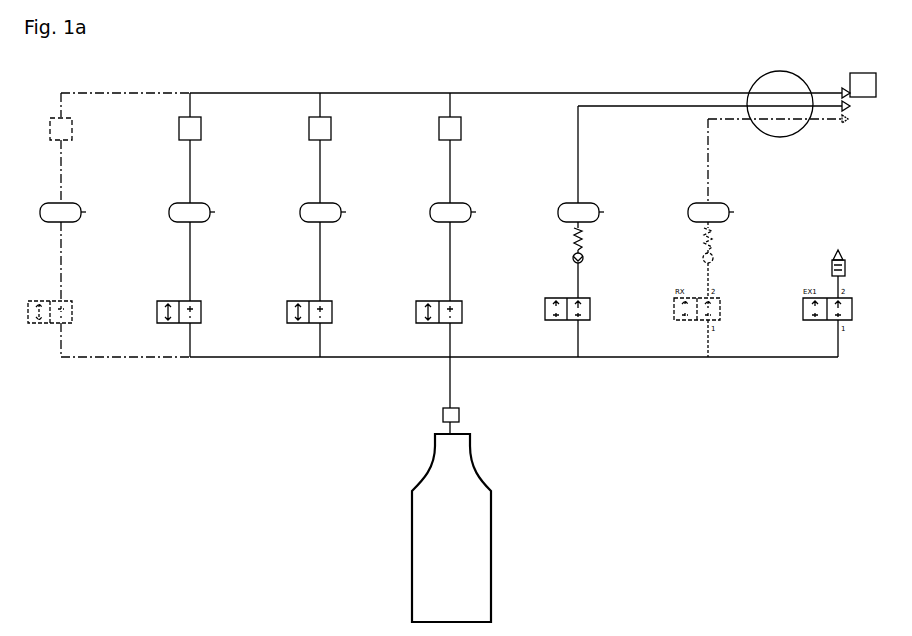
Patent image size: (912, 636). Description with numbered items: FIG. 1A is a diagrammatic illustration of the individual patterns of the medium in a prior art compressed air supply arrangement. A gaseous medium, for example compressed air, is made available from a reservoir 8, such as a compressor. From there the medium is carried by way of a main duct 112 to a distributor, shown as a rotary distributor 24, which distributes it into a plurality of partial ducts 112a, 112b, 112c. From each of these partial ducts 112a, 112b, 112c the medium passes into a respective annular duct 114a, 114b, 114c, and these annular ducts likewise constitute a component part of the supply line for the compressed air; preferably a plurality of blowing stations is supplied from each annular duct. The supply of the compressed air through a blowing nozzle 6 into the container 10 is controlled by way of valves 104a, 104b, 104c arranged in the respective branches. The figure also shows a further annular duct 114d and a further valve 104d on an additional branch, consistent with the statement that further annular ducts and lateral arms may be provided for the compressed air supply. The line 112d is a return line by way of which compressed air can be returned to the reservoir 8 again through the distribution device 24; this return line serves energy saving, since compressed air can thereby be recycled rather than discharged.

The main duct 112 is at (252, 92).
The partial duct 112a is at (191, 170).
The partial duct 112b is at (321, 168).
The partial duct 112c is at (451, 168).
The return line 112d is at (579, 165).
The annular duct 114a is at (198, 213).
The annular duct 114b is at (328, 213).
The annular duct 114c is at (459, 213).
The fourth pressure reservoir 114d is at (587, 213).
The valve 104a is at (201, 315).
The valve 104b is at (332, 315).
The valve 104c is at (462, 315).
The fourth valve 104d is at (590, 314).
The rotary distributor 24 is at (781, 84).
The reservoir 8 is at (861, 84).
The blowing nozzle 6 is at (459, 415).
The container 10 is at (474, 532).